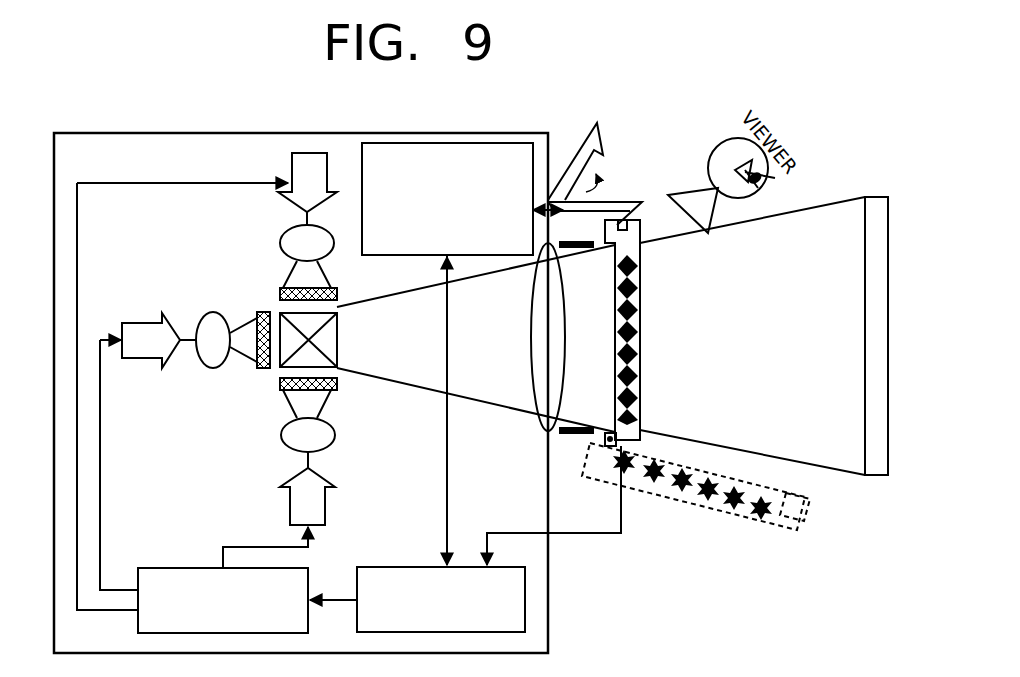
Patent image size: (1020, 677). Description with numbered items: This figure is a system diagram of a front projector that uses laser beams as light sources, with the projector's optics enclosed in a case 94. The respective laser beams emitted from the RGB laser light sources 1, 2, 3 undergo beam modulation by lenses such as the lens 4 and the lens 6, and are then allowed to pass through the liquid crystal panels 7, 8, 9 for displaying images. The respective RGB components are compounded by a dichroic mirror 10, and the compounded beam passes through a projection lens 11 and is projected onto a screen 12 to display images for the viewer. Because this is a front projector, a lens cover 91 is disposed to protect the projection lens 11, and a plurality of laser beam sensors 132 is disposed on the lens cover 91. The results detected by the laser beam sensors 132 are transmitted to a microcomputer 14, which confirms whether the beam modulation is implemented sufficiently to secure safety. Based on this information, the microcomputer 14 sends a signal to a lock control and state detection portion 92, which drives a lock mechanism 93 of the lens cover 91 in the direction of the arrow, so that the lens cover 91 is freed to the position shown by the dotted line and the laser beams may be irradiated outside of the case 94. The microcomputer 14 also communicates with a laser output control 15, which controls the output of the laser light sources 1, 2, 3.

The laser light source 1 is at (157, 318).
The laser light source 2 is at (290, 172).
The laser light source 3 is at (290, 506).
The lens 4 is at (211, 322).
The lens 6 is at (280, 446).
The liquid crystal panel 7 is at (263, 322).
The liquid crystal panel 8 is at (337, 292).
The liquid crystal panel 9 is at (337, 392).
The dichroic mirror 10 is at (302, 357).
The projection lens 11 is at (533, 342).
The screen 12 is at (873, 478).
The microcomputer 14 is at (403, 567).
The laser output control 15 is at (173, 568).
The lens cover 91 is at (659, 333).
The lock control and state detection portion 92 is at (467, 143).
The lock mechanism 93 is at (616, 202).
The case 94 is at (277, 133).
The laser beam sensors 132 is at (641, 320).